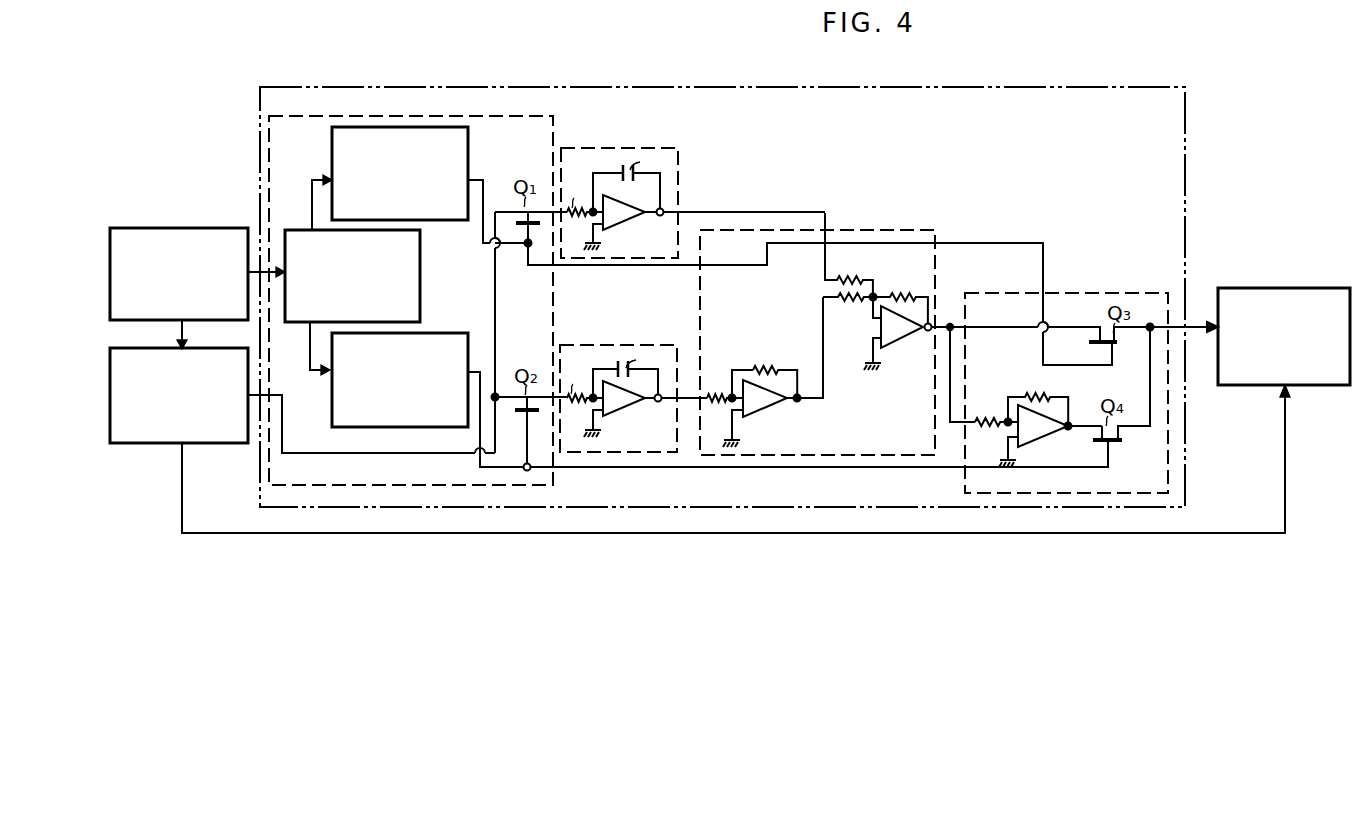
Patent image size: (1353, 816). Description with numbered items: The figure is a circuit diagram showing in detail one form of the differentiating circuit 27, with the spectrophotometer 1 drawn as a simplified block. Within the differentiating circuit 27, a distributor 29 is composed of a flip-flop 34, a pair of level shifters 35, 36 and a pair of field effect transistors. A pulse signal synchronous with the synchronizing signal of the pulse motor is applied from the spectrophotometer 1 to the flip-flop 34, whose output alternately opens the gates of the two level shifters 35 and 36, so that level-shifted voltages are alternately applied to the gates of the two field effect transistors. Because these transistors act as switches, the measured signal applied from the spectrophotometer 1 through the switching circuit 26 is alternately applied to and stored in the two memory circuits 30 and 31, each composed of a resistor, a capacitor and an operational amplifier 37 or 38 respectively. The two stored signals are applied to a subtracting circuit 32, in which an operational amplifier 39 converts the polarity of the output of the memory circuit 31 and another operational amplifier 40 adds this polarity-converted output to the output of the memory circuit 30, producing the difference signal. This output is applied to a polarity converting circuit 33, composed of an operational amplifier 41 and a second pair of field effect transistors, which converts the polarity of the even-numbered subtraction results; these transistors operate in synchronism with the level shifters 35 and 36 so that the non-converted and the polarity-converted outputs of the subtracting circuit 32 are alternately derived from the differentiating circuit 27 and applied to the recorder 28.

The spectrophotometer 1 is at (171, 228).
The switching circuit 26 is at (168, 443).
The differentiating circuit 27 is at (647, 74).
The recorder 28 is at (1298, 288).
The distributor 29 is at (460, 112).
The memory circuit 30 is at (714, 184).
The memory circuit 31 is at (664, 342).
The subtracting circuit 32 is at (912, 217).
The polarity converting circuit 33 is at (1130, 293).
The flip-flop 34 is at (430, 265).
The level shifter 35 is at (468, 165).
The level shifter 36 is at (332, 401).
The operational amplifier 37 is at (622, 228).
The operational amplifier 38 is at (620, 414).
The operational amplifier 39 is at (758, 418).
The operational amplifier 40 is at (898, 338).
The operational amplifier 41 is at (1035, 435).